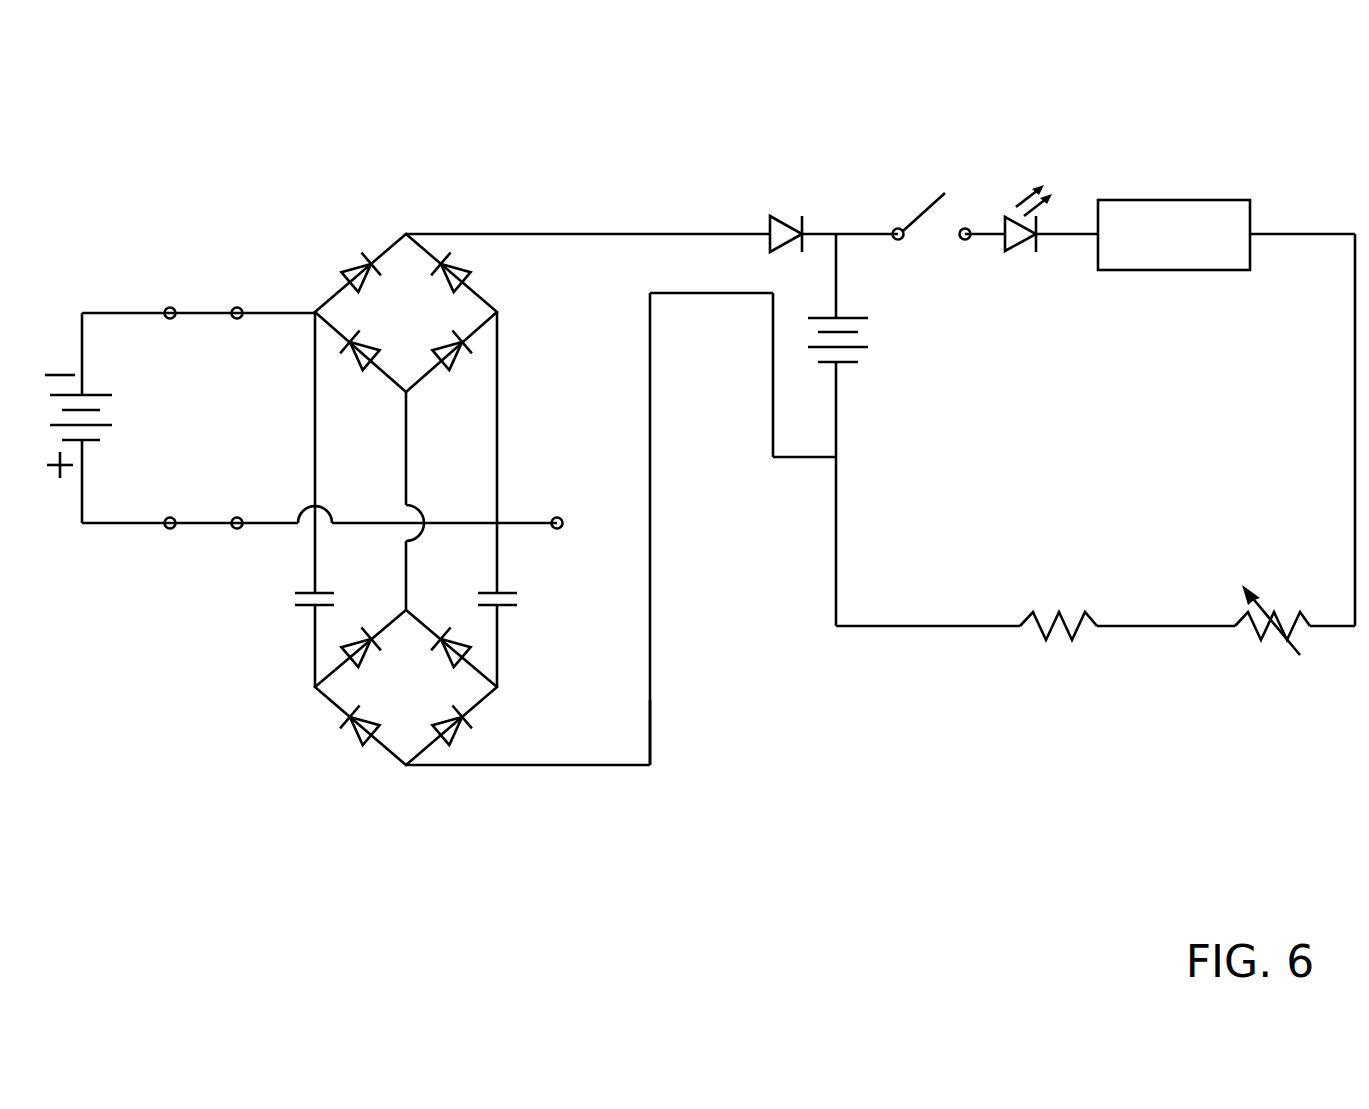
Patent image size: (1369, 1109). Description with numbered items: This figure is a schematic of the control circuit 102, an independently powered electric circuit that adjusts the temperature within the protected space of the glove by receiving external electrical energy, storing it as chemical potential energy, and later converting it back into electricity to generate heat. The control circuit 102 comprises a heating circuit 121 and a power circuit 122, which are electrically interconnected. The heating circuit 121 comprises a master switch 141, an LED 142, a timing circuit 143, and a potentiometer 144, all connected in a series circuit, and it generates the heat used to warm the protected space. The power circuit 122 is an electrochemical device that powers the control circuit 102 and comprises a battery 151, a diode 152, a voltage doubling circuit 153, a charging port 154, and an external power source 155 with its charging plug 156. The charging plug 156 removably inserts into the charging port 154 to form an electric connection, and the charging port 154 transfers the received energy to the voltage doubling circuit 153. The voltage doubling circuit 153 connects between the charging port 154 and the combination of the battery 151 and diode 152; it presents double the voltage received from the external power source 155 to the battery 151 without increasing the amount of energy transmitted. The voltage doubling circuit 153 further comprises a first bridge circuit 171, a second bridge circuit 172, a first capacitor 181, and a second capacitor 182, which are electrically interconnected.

The control circuit 102 is at (1277, 182).
The heating circuit 121 is at (1317, 668).
The power circuit 122 is at (658, 783).
The master switch 141 is at (917, 207).
The LED 142 is at (1020, 258).
The timing circuit 143 is at (1171, 201).
The potentiometer 144 is at (1283, 606).
The battery 151 is at (870, 342).
The diode 152 is at (791, 222).
The voltage doubling circuit 153 is at (407, 777).
The charging port 154 is at (237, 306).
The external power source 155 is at (115, 412).
The charging plug 156 is at (169, 306).
The first bridge circuit 171 is at (490, 289).
The second bridge circuit 172 is at (480, 713).
The first capacitor 181 is at (300, 612).
The second capacitor 182 is at (520, 601).